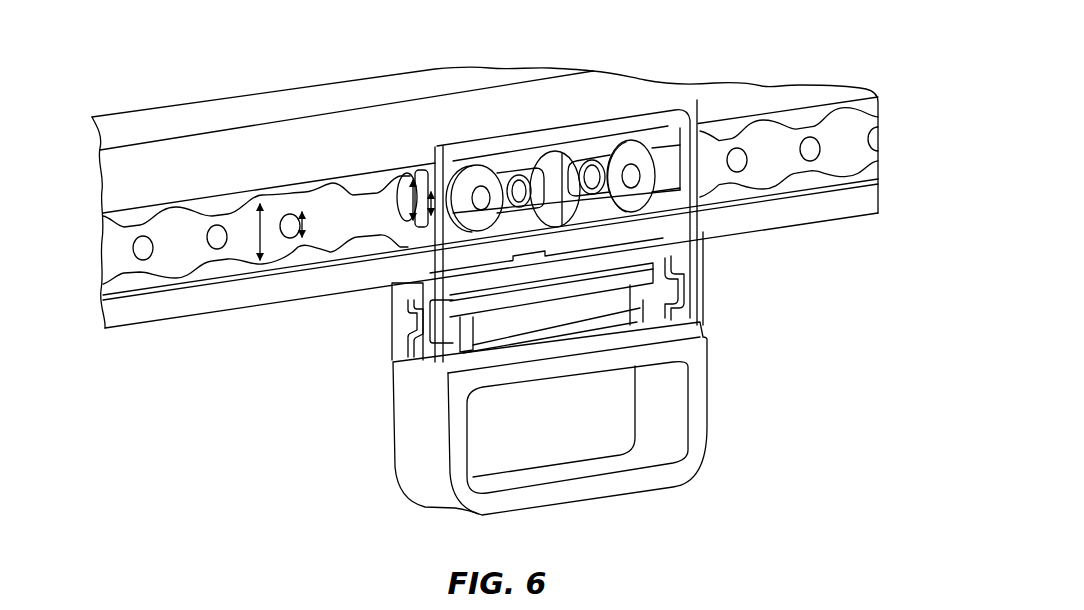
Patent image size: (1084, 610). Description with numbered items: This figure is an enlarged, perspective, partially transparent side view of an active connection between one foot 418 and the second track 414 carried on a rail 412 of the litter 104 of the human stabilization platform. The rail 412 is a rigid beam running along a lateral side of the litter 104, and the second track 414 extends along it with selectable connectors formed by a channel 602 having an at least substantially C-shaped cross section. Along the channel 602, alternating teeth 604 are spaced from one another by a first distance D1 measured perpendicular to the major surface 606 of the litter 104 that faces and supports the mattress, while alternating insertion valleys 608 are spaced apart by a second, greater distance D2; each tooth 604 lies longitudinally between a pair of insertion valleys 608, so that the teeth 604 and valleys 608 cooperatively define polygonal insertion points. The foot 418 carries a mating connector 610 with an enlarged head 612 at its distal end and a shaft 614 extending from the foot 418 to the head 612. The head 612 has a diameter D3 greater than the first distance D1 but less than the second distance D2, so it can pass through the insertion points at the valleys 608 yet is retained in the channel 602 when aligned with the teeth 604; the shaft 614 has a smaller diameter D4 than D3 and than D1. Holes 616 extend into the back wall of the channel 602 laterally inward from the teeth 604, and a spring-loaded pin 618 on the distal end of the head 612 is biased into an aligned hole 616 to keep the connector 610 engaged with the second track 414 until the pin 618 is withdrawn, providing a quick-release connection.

The litter 104 is at (305, 104).
The major surface 606 is at (452, 78).
The rail 412 is at (758, 85).
The channel 602 is at (852, 128).
The teeth 604 is at (221, 200).
The insertion valleys 608 is at (196, 270).
The holes 616 is at (133, 250).
The second track 414 is at (815, 180).
The spring-loaded pin 618 is at (398, 178).
The enlarged head 612 is at (405, 227).
The shaft 614 is at (452, 190).
The mating connector 610 is at (565, 170).
The foot 418 is at (667, 420).
The first distance D1 is at (302, 245).
The second distance D2 is at (259, 268).
The head diameter D3 is at (412, 176).
The shaft diameter D4 is at (433, 218).